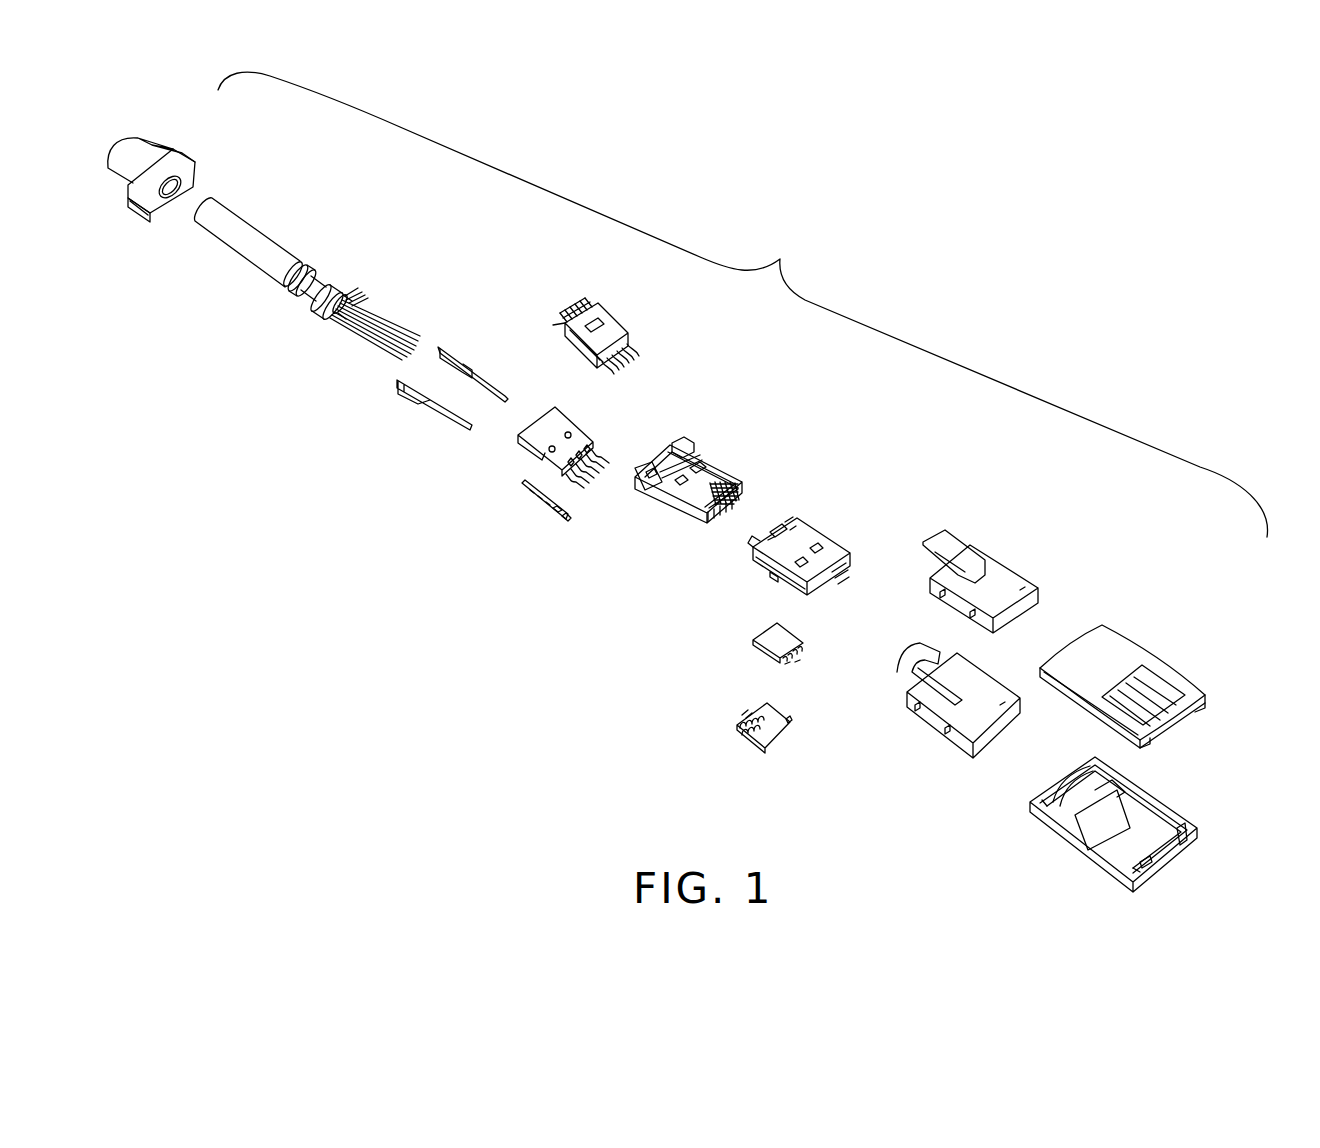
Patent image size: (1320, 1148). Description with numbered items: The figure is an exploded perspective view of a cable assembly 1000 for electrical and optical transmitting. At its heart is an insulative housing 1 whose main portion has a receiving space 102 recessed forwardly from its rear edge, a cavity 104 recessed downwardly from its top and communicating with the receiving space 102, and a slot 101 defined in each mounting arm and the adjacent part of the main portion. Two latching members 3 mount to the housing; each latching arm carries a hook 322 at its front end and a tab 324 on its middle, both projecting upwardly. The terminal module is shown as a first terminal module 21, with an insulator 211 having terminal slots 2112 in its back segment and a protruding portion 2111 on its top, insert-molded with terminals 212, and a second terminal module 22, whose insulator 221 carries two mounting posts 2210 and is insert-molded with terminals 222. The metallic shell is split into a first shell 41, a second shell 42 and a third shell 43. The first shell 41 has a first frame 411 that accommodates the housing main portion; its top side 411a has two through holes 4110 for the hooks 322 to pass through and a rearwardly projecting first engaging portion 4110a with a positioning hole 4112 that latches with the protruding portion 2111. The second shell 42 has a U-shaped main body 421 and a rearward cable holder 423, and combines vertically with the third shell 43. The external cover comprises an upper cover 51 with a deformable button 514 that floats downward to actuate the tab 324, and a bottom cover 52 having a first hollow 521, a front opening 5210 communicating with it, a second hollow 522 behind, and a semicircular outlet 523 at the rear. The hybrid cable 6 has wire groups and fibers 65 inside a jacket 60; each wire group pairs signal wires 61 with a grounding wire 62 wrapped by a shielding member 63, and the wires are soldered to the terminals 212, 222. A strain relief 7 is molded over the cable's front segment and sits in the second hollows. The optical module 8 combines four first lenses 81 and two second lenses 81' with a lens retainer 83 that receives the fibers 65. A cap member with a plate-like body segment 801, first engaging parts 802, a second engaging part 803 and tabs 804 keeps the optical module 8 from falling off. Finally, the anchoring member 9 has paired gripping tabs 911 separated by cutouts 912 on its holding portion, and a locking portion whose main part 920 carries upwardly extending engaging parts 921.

The cable assembly 1000 is at (743, 304).
The insulative housing 1 is at (740, 450).
The slot 101 is at (705, 453).
The receiving space 102 is at (688, 435).
The cavity 104 is at (778, 477).
The latching member 3 is at (495, 333).
The hook 322 is at (503, 393).
The tab 324 is at (465, 372).
The cable 6 is at (313, 247).
The jacket 60 is at (270, 253).
The signal wires 61 is at (362, 302).
The grounding wire 62 is at (348, 293).
The shielding member 63 is at (340, 283).
The fibers 65 is at (357, 350).
The strain relief 7 is at (199, 140).
The optical module 8 is at (758, 627).
The first lenses 81 is at (821, 657).
The second lenses 81' is at (816, 676).
The lens retainer 83 is at (767, 640).
The body segment 801 is at (773, 733).
The first engaging parts 802 is at (787, 723).
The second engaging part 803 is at (750, 717).
The tabs 804 is at (747, 727).
The anchoring member 9 is at (502, 478).
The gripping tabs 911 is at (530, 495).
The cutout 912 is at (543, 510).
The main part 920 is at (557, 520).
The engaging part 921 is at (568, 522).
The first terminal module 21 is at (640, 297).
The insulator 211 is at (593, 317).
The protruding portion 2111 is at (607, 327).
The terminal slots 2112 is at (580, 303).
The terminals 212 is at (640, 350).
The second terminal module 22 is at (603, 432).
The insulator 221 is at (540, 430).
The mounting posts 2210 is at (573, 428).
The terminals 222 is at (587, 480).
The first shell 41 is at (835, 530).
The first frame 411 is at (783, 575).
The top side 411a is at (813, 533).
The through holes 4110 is at (833, 540).
The first engaging portion 4110a is at (803, 538).
The positioning hole 4112 is at (748, 538).
The second shell 42 is at (985, 657).
The main body 421 is at (933, 710).
The cable holder 423 is at (905, 667).
The third shell 43 is at (1015, 553).
The upper cover 51 is at (1163, 642).
The deformable button 514 is at (1168, 682).
The bottom cover 52 is at (1162, 790).
The first hollow 521 is at (1130, 847).
The opening 5210 is at (1163, 860).
The second hollow 522 is at (1053, 812).
The outlet 523 is at (1057, 780).